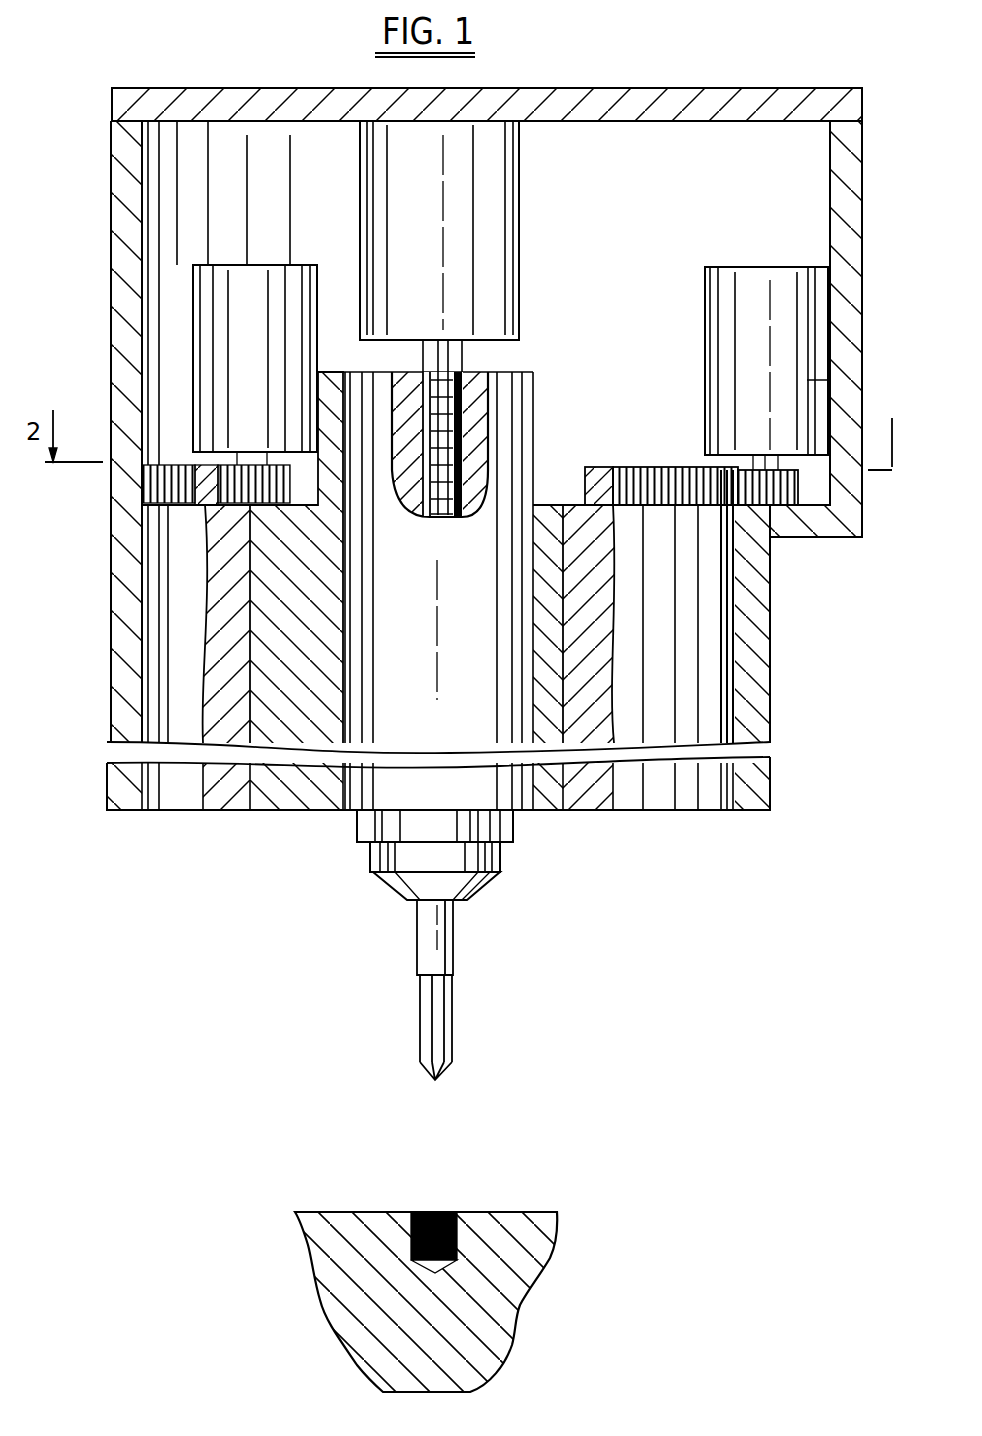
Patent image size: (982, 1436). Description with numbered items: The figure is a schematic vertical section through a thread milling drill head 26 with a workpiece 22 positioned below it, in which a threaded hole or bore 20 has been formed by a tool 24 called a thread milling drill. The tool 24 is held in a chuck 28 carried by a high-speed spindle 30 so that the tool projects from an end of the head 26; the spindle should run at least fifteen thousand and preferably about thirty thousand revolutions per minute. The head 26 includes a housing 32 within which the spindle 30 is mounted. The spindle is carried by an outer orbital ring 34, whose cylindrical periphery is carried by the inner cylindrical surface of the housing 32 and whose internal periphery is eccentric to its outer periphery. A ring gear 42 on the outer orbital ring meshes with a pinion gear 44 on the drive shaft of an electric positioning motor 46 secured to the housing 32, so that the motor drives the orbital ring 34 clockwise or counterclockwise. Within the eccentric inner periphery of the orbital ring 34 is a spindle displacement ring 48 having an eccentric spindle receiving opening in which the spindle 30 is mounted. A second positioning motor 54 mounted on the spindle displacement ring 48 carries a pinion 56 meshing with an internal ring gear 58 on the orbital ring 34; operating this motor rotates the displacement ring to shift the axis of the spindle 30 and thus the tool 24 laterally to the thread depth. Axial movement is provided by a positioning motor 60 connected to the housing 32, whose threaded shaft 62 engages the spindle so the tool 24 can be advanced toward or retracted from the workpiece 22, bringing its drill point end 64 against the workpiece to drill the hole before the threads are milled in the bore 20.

The threaded hole or bore 20 is at (436, 1212).
The workpiece 22 is at (558, 1253).
The tool 24 is at (458, 965).
The thread milling drill head 26 is at (770, 782).
The chuck 28 is at (492, 892).
The spindle 30 is at (422, 712).
The housing 32 is at (771, 692).
The outer orbital ring 34 is at (735, 647).
The ring gear 42 is at (640, 466).
The pinion gear 44 is at (796, 506).
The electric positioning motor 46 is at (752, 268).
The spindle displacement ring 48 is at (300, 806).
The second positioning motor 54 is at (308, 268).
The pinion 56 is at (205, 508).
The internal ring gear 58 is at (567, 468).
The positioning motor 60 is at (520, 186).
The threaded shaft 62 is at (476, 366).
The drill point end 64 is at (440, 1076).